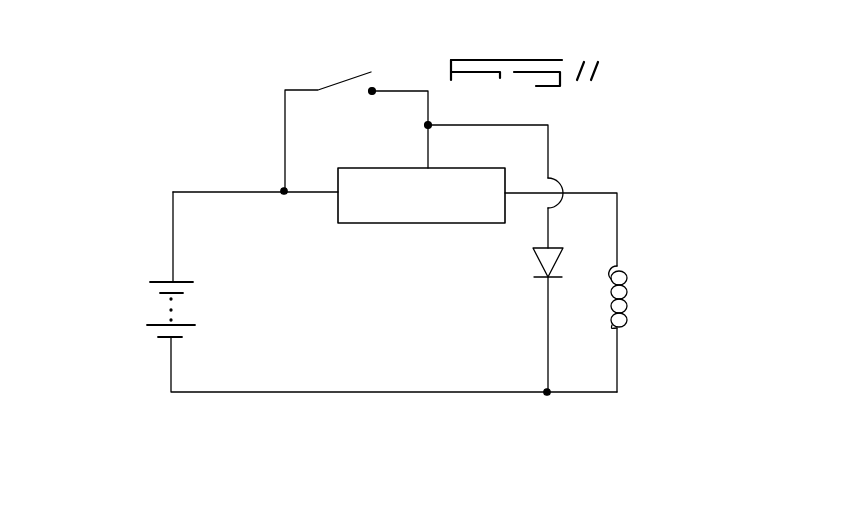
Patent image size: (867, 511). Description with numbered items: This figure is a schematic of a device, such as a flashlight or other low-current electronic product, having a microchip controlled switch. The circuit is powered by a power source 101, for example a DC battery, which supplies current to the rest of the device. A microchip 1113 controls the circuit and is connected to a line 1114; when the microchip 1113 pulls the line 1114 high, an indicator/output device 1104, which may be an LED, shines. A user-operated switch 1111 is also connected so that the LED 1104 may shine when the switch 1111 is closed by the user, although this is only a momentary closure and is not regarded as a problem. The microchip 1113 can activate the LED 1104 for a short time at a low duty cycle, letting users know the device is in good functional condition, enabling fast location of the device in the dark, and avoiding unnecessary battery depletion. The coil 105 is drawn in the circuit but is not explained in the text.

The power source 101 is at (157, 303).
The coil / solenoid 105 is at (660, 291).
The indicator/output device 1104 is at (539, 266).
The switch 1111 is at (402, 48).
The microchip 1113 is at (403, 258).
The line 1114 is at (612, 133).